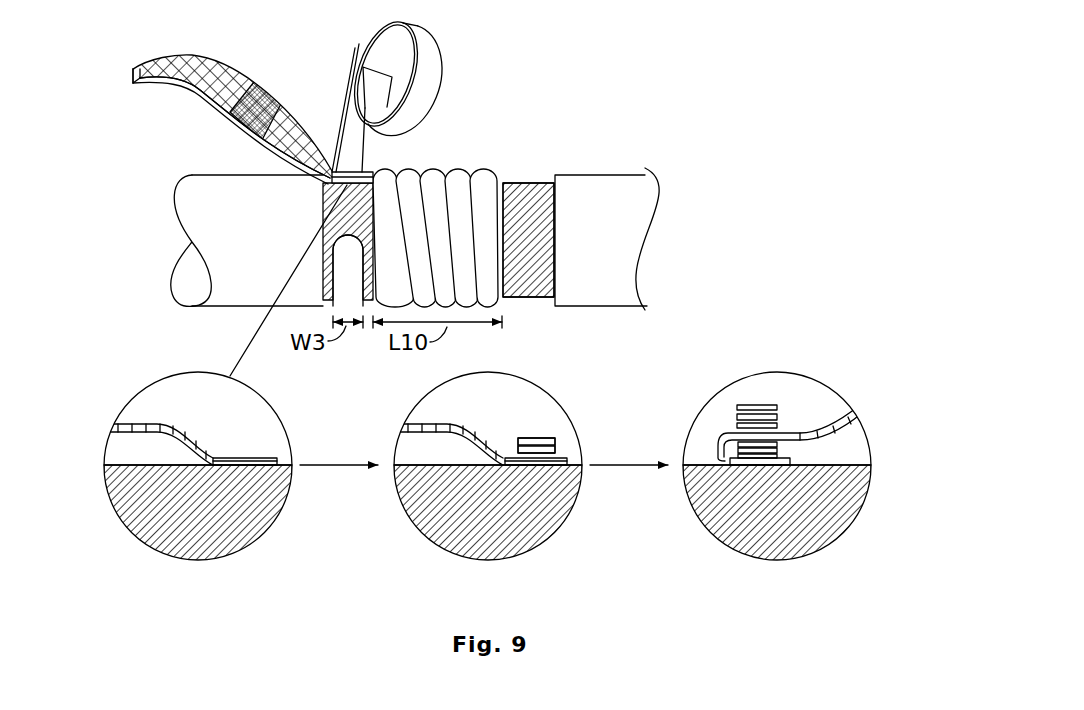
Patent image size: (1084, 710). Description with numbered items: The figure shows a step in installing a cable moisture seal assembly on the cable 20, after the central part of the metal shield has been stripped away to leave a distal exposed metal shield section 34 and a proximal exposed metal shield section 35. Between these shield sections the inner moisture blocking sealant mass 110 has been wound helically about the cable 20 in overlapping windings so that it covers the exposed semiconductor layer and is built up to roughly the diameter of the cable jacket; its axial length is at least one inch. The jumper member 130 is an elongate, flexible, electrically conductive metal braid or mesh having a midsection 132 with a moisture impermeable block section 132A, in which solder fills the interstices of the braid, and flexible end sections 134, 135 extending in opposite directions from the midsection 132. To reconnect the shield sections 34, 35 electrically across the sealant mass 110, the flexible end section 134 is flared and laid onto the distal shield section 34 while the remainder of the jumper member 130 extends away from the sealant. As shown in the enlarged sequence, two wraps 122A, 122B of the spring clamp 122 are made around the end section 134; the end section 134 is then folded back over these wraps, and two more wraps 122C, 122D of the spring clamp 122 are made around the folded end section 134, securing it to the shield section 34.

The cable 20 is at (645, 142).
The distal exposed metal shield section 34 is at (366, 200).
The proximal exposed metal shield section 35 is at (542, 253).
The inner moisture blocking sealant mass 110 is at (478, 165).
The spring clamp 122 is at (430, 63).
The first wrap of spring clamp 122A is at (547, 437).
The second wrap of spring clamp 122B is at (560, 451).
The third wrap of spring clamp 122C is at (737, 427).
The fourth wrap of spring clamp 122D is at (780, 420).
The jumper member 130 is at (223, 102).
The midsection 132 is at (218, 118).
The block section 132A is at (237, 127).
The end section 134 is at (350, 176).
The end section 135 is at (135, 80).